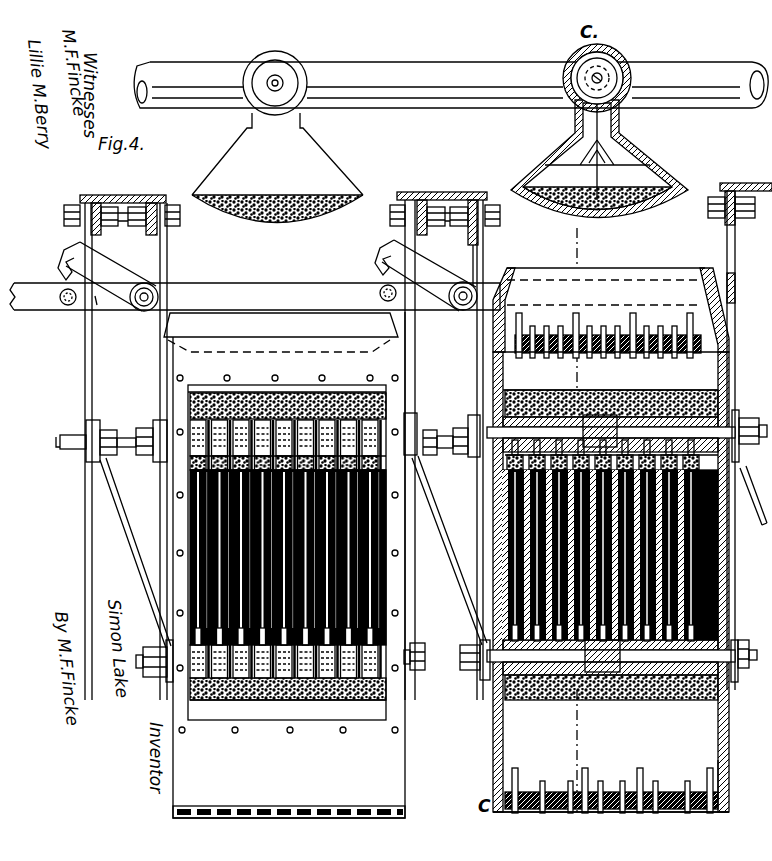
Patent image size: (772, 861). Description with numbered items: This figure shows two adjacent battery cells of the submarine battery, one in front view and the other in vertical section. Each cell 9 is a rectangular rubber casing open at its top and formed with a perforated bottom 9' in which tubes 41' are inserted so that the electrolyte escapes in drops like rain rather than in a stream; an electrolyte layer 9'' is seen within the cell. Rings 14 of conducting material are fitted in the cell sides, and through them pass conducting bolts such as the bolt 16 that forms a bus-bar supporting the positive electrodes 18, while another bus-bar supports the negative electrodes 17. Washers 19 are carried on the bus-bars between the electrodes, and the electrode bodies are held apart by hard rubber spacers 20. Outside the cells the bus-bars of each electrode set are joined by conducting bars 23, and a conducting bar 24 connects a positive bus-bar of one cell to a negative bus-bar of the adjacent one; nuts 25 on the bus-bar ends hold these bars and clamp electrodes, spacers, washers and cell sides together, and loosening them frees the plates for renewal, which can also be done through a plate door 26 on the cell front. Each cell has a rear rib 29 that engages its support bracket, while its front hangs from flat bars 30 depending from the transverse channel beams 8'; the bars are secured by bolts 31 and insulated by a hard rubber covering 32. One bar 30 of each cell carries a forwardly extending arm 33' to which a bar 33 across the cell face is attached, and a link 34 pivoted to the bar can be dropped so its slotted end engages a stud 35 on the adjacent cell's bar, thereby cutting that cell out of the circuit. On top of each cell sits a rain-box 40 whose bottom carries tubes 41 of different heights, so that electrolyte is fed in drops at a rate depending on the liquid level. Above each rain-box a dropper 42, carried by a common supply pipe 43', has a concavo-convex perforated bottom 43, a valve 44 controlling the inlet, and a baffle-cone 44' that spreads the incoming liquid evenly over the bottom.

The transverse channel beam 8' is at (426, 187).
The cell 9 is at (451, 565).
The perforated bottom 9' is at (713, 769).
The sand layer 9'' is at (453, 561).
The ring 14 is at (736, 418).
The bolt 16 is at (462, 656).
The negative electrode 17 is at (322, 425).
The positive electrode 18 is at (275, 660).
The washer 19 is at (225, 430).
The spacer 20 is at (188, 586).
The conducting bar 23 is at (150, 463).
The conducting bar 24 is at (124, 546).
The nut 25 is at (140, 458).
The plate door 26 is at (729, 808).
The rib 29 is at (405, 810).
The flat bar 30 is at (160, 369).
The bolt 31 is at (390, 218).
The hard rubber covering 32 is at (91, 226).
The bar 33 is at (390, 307).
The forwardly extending arm 33' is at (272, 313).
The link 34 is at (119, 278).
The stud 35 is at (60, 292).
The rain-box 40 is at (446, 310).
The tube 41 is at (608, 334).
The tube 41' is at (611, 781).
The dropper 42 is at (678, 134).
The concavo-convex perforated bottom 43 is at (432, 219).
The common supply pipe 43' is at (451, 72).
The valve 44 is at (610, 71).
The baffle-cone 44' is at (580, 144).